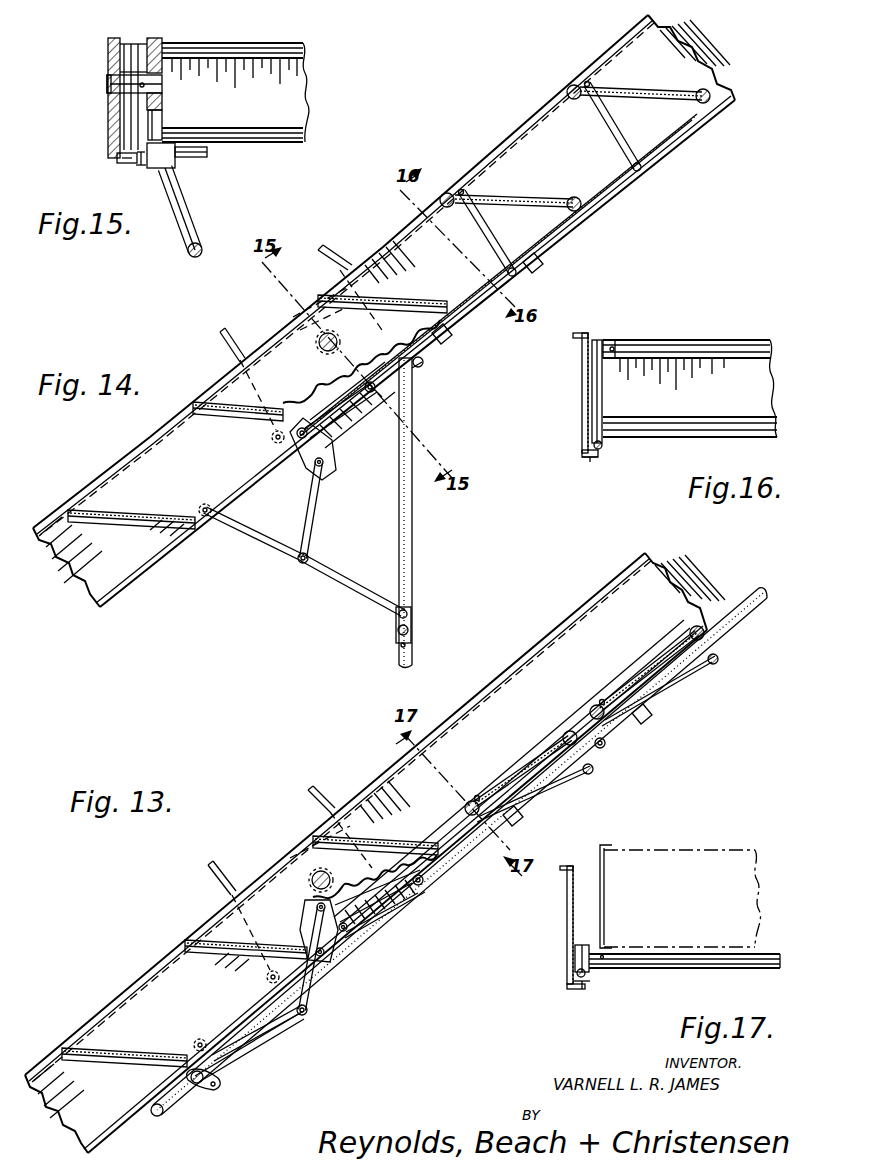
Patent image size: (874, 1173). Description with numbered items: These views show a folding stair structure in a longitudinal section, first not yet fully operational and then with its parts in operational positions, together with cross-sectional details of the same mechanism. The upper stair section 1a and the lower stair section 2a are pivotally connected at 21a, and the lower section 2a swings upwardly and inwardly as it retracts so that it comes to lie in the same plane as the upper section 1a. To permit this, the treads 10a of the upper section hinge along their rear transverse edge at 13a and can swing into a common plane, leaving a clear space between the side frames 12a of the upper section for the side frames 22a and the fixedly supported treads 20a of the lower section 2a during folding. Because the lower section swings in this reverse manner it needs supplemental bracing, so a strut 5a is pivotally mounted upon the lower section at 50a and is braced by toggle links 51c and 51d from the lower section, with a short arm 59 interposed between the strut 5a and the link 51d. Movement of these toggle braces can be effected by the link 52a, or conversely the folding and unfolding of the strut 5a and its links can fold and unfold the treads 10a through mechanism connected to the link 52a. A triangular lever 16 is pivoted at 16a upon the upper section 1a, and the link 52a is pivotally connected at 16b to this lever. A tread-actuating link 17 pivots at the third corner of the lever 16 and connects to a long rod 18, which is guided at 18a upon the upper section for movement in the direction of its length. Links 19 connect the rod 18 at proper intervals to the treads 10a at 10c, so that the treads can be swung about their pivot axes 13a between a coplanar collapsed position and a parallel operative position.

In FIG. 15, the upper stair section 1a is at (100, 150).
In FIG. 14, the upper stair section 1a is at (570, 80).
In FIG. 16, the upper stair section 1a is at (620, 334).
In FIG. 17, the upper stair section 1a is at (650, 941).
In FIG. 13, the upper stair section 1a is at (625, 570).
In FIG. 15, the lower stair section 2a is at (258, 79).
In FIG. 14, the lower stair section 2a is at (78, 487).
In FIG. 13, the lower stair section 2a is at (88, 1005).
In FIG. 15, the strut 5a is at (188, 202).
In FIG. 14, the strut 5a is at (412, 560).
In FIG. 13, the strut 5a is at (168, 1110).
In FIG. 14, the treads of the upper section 10a is at (511, 194).
In FIG. 16, the treads of the upper section 10a is at (682, 366).
In FIG. 17, the treads of the upper section 10a is at (676, 968).
In FIG. 13, the treads of the upper section 10a is at (684, 646).
In FIG. 14, the tread connection point 10c is at (457, 188).
In FIG. 17, the tread connection point 10c is at (574, 958).
In FIG. 13, the tread connection point 10c is at (601, 704).
In FIG. 15, the side frames of the upper section 12a is at (108, 123).
In FIG. 14, the side frames of the upper section 12a is at (612, 53).
In FIG. 16, the side frames of the upper section 12a is at (582, 390).
In FIG. 17, the side frames of the upper section 12a is at (567, 898).
In FIG. 13, the side frames of the upper section 12a is at (586, 616).
In FIG. 14, the tread hinge axis 13a is at (705, 104).
In FIG. 16, the tread hinge axis 13a is at (774, 428).
In FIG. 13, the tread hinge axis 13a is at (604, 746).
In FIG. 14, the triangular lever 16 is at (302, 444).
In FIG. 13, the triangular lever 16 is at (350, 948).
In FIG. 14, the lever pivot 16a is at (315, 400).
In FIG. 13, the lever pivot 16a is at (340, 956).
In FIG. 14, the link pivot connection 16b is at (324, 466).
In FIG. 13, the link pivot connection 16b is at (316, 906).
In FIG. 14, the tread-actuating link 17 is at (352, 404).
In FIG. 13, the tread-actuating link 17 is at (385, 920).
In FIG. 15, the long rod 18 is at (124, 164).
In FIG. 14, the long rod 18 is at (533, 272).
In FIG. 16, the long rod 18 is at (603, 446).
In FIG. 17, the long rod 18 is at (586, 976).
In FIG. 13, the long rod 18 is at (655, 690).
In FIG. 15, the rod guide 18a is at (142, 166).
In FIG. 14, the rod guide 18a is at (525, 286).
In FIG. 16, the rod guide 18a is at (598, 456).
In FIG. 17, the rod guide 18a is at (584, 984).
In FIG. 13, the rod guide 18a is at (640, 718).
In FIG. 15, the links 19 is at (118, 60).
In FIG. 14, the links 19 is at (615, 120).
In FIG. 16, the links 19 is at (596, 405).
In FIG. 13, the links 19 is at (708, 664).
In FIG. 15, the treads of the lower section 20a is at (304, 96).
In FIG. 14, the treads of the lower section 20a is at (115, 510).
In FIG. 17, the treads of the lower section 20a is at (646, 850).
In FIG. 13, the treads of the lower section 20a is at (430, 842).
In FIG. 15, the pivotal connection 21a is at (107, 82).
In FIG. 14, the pivotal connection 21a is at (322, 340).
In FIG. 13, the pivotal connection 21a is at (312, 876).
In FIG. 15, the side frames of the lower section 22a is at (166, 113).
In FIG. 14, the side frames of the lower section 22a is at (232, 382).
In FIG. 17, the side frames of the lower section 22a is at (598, 876).
In FIG. 13, the side frames of the lower section 22a is at (78, 1118).
In FIG. 15, the strut pivot 50a is at (208, 152).
In FIG. 14, the strut pivot 50a is at (424, 364).
In FIG. 13, the strut pivot 50a is at (398, 902).
In FIG. 14, the toggle link 51c is at (267, 538).
In FIG. 13, the toggle link 51c is at (290, 1036).
In FIG. 14, the toggle link 51d is at (336, 578).
In FIG. 13, the toggle link 51d is at (258, 1058).
In FIG. 14, the link 52a is at (314, 524).
In FIG. 13, the link 52a is at (314, 1000).
In FIG. 14, the short arm 59 is at (412, 616).
In FIG. 13, the short arm 59 is at (204, 1082).